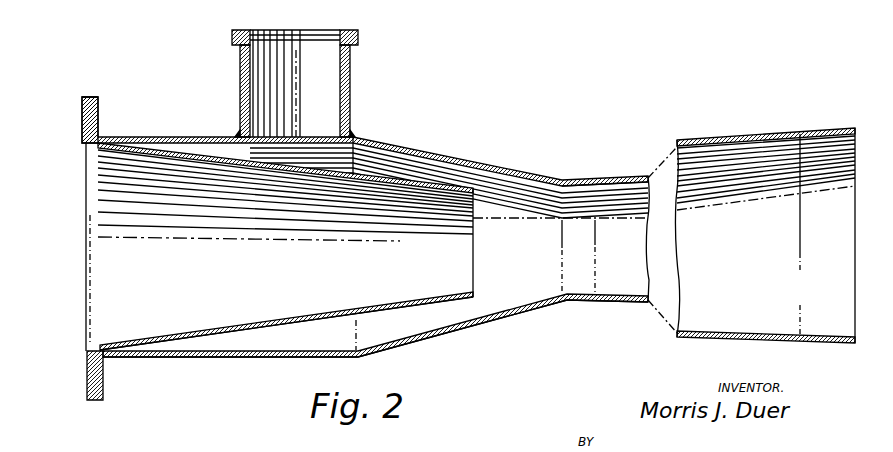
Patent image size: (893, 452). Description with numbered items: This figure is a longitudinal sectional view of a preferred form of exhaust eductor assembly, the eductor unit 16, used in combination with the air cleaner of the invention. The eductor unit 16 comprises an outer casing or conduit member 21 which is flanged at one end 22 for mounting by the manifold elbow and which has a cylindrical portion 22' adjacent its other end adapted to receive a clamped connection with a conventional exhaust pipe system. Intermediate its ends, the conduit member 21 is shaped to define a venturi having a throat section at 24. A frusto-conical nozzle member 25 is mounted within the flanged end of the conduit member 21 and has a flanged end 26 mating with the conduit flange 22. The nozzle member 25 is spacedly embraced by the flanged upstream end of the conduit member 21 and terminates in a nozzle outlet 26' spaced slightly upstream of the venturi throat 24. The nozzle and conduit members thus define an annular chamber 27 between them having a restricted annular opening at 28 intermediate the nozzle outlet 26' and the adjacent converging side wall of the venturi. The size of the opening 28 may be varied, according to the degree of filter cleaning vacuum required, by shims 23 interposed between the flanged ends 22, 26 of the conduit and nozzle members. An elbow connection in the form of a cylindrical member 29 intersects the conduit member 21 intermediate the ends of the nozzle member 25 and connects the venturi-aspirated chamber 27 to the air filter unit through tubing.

The eductor unit 16 is at (497, 162).
The outer casing or conduit member 21 is at (750, 139).
The flanged end 22 is at (109, 114).
The cylindrical portion 22' is at (831, 250).
The shims 23 is at (90, 96).
The throat section 24 is at (578, 286).
The frusto-conical nozzle member 25 is at (188, 346).
The flanged end 26 is at (82, 397).
The nozzle outlet 26' is at (317, 246).
The annular chamber 27 is at (388, 331).
The restricted annular opening 28 is at (468, 306).
The cylindrical member 29 is at (349, 87).